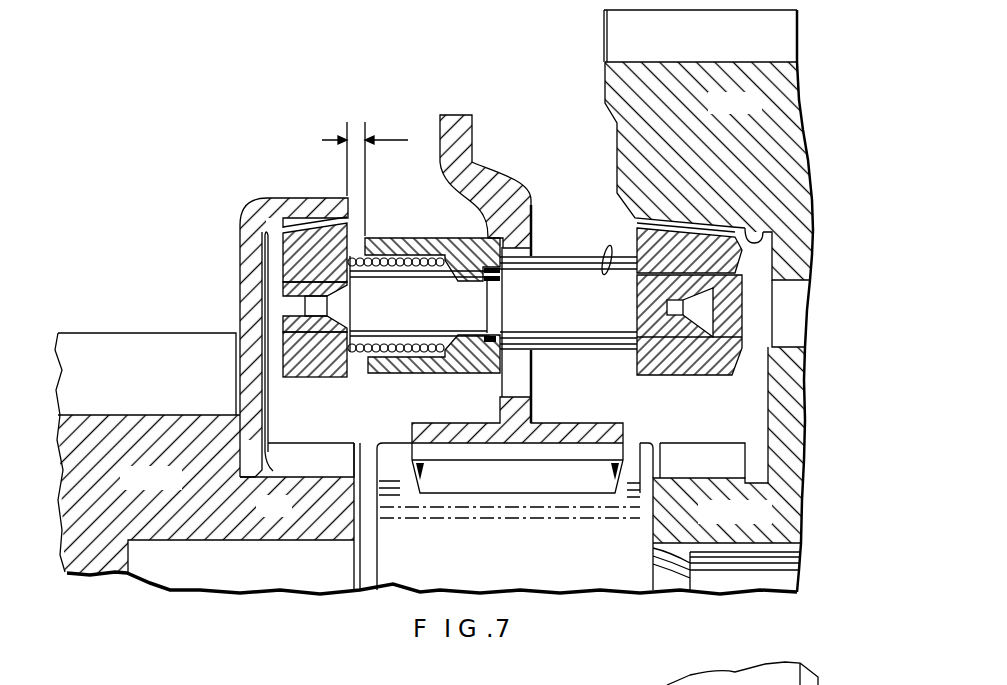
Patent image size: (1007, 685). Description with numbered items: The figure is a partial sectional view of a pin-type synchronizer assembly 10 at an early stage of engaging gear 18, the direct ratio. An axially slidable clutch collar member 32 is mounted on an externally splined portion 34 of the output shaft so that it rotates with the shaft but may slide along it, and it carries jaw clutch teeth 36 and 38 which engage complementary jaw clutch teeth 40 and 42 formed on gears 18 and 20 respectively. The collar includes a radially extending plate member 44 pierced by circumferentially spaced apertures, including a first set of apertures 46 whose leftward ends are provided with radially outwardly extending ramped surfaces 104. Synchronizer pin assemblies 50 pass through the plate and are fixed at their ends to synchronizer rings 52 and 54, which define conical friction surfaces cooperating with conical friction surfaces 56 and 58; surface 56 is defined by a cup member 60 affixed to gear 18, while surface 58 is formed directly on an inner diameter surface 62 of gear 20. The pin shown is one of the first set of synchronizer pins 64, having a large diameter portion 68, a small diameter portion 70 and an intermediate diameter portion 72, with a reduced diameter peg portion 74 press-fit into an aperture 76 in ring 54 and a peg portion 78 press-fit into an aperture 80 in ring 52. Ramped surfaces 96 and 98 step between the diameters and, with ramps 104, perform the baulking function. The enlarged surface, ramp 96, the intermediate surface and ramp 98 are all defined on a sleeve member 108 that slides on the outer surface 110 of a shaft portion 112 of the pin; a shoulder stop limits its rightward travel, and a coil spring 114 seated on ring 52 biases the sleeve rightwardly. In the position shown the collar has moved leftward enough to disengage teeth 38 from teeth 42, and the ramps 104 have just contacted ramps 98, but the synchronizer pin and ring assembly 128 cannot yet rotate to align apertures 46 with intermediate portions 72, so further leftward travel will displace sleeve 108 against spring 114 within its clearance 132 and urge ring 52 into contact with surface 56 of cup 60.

The assembly 10 is at (452, 96).
The gear 18 is at (204, 453).
The gear 20 is at (729, 468).
The clutch collar member 32 is at (594, 416).
The externally splined portion 34 is at (394, 462).
The jaw clutch teeth 36 is at (432, 482).
The jaw clutch teeth 38 is at (605, 463).
The jaw clutch teeth 40 is at (318, 458).
The jaw clutch teeth 42 is at (737, 462).
The flange or plate member 44 is at (478, 150).
The apertures 46 is at (534, 383).
The synchronizer pin assemblies 50 is at (585, 242).
The synchronizer ring 52 is at (307, 372).
The synchronizer ring 54 is at (703, 368).
The conical friction surface 56 is at (316, 237).
The conical friction surface 58 is at (680, 230).
The cup member 60 is at (241, 300).
The inner diameter surface 62 is at (757, 233).
The synchronizer pins 64 is at (434, 268).
The large diameter portion 68 is at (398, 373).
The small diameter portion 70 is at (606, 279).
The intermediate diameter portion 72 is at (500, 365).
The reduced diameter peg portion 74 is at (695, 283).
The aperture 76 is at (685, 316).
The reduced diameter peg portion 78 is at (303, 286).
The aperture 80 is at (349, 310).
The ramped surface 96 is at (525, 200).
The ramped surface 98 is at (521, 243).
The ramped surfaces 104 is at (493, 407).
The collar or sleeve member 108 is at (500, 276).
The outer surface 110 is at (450, 352).
The shaft portion 112 is at (389, 285).
The coil spring 114 is at (360, 353).
The synchronizer pin and ring assembly 128 is at (655, 180).
The clearance 132 is at (358, 126).